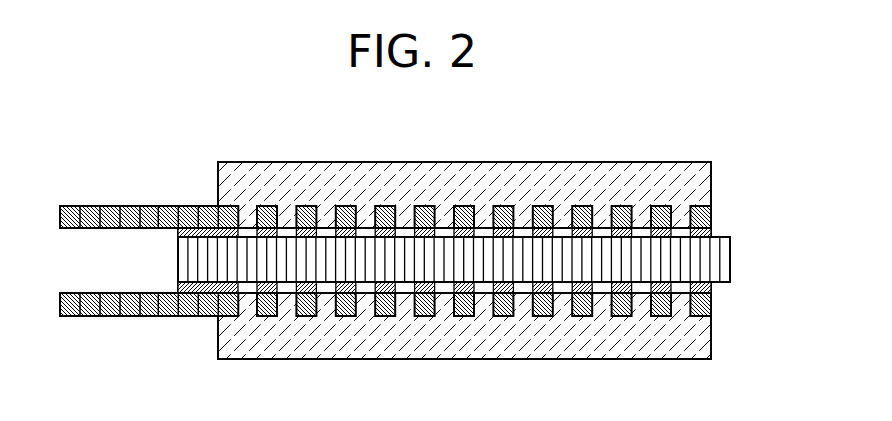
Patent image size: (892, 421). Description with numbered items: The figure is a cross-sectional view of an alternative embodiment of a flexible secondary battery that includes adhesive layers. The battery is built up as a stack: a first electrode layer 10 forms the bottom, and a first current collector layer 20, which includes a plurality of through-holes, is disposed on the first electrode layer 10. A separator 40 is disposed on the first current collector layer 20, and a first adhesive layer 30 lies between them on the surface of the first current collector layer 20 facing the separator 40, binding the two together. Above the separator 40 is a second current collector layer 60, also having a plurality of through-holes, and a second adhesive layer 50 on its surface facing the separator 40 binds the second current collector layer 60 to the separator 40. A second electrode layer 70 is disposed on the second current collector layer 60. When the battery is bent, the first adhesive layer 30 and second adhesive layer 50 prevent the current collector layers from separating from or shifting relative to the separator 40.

The first electrode layer 10 is at (711, 338).
The first current collector layer 20 is at (711, 308).
The first adhesive layer 30 is at (711, 288).
The separator 40 is at (730, 260).
The second adhesive layer 50 is at (711, 233).
The second current collector layer 60 is at (711, 215).
The second electrode layer 70 is at (711, 182).